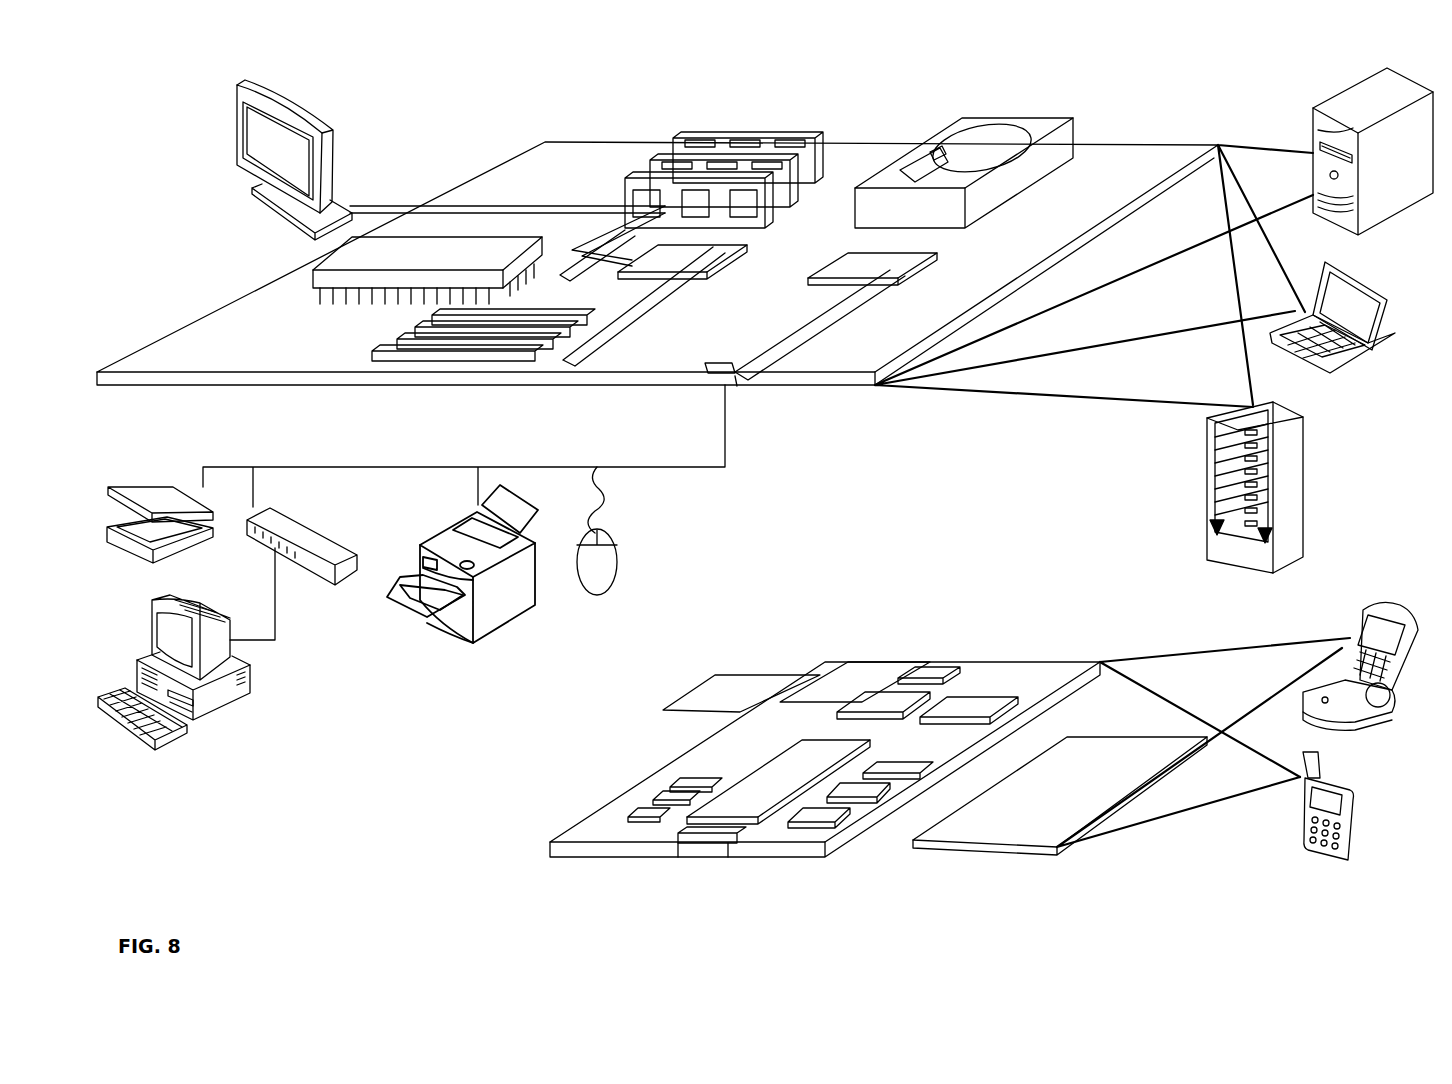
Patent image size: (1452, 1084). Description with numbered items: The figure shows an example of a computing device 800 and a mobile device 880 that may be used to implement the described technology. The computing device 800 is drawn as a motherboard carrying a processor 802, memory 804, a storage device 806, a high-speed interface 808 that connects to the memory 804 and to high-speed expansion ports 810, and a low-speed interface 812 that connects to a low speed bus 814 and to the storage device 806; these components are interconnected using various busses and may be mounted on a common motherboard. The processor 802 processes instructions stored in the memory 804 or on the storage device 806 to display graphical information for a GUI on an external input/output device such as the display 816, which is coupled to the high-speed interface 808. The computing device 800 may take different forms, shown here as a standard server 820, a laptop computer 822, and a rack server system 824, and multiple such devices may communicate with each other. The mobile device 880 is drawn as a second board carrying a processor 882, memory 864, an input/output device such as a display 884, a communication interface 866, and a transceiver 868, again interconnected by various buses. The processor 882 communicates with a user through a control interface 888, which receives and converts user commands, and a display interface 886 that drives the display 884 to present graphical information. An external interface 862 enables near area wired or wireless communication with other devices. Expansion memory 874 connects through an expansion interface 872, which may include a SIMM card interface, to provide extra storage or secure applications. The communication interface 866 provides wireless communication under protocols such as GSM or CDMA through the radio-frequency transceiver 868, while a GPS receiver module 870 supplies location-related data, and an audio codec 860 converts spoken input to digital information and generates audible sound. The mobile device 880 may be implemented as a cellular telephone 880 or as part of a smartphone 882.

The computing device 800 is at (129, 142).
The processor 802 is at (318, 280).
The memory 804 is at (694, 136).
The storage device 806 is at (960, 128).
The high-speed interface 808 is at (648, 252).
The high-speed expansion ports 810 is at (395, 341).
The low-speed interface 812 is at (840, 280).
The low speed bus 814 is at (737, 375).
The display 816 is at (238, 88).
The standard server 820 is at (1311, 128).
The laptop computer 822 is at (1385, 302).
The rack server system 824 is at (1207, 518).
The audio codec 860 is at (893, 765).
The external interface 862 is at (708, 845).
The memory 864 is at (648, 793).
The communication interface 866 is at (885, 712).
The transceiver 868 is at (968, 705).
The GPS receiver module 870 is at (937, 670).
The expansion interface 872 is at (793, 678).
The expansion memory 874 is at (713, 678).
The mobile device 880 is at (1350, 637).
The processor 882 is at (748, 808).
The display 884 is at (1015, 822).
The display interface 886 is at (825, 812).
The control interface 888 is at (862, 788).